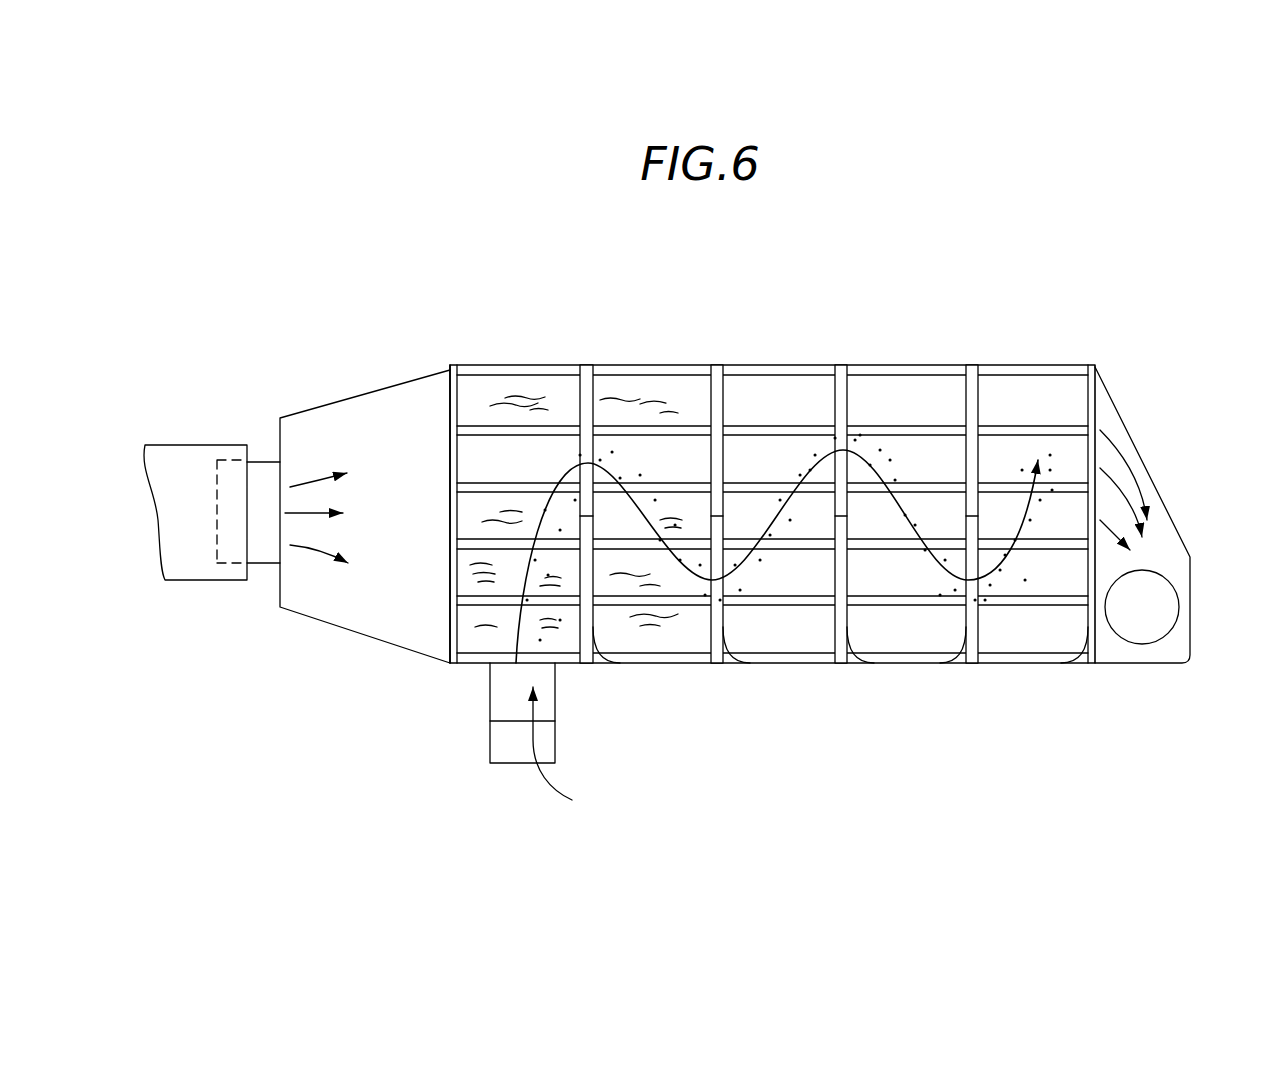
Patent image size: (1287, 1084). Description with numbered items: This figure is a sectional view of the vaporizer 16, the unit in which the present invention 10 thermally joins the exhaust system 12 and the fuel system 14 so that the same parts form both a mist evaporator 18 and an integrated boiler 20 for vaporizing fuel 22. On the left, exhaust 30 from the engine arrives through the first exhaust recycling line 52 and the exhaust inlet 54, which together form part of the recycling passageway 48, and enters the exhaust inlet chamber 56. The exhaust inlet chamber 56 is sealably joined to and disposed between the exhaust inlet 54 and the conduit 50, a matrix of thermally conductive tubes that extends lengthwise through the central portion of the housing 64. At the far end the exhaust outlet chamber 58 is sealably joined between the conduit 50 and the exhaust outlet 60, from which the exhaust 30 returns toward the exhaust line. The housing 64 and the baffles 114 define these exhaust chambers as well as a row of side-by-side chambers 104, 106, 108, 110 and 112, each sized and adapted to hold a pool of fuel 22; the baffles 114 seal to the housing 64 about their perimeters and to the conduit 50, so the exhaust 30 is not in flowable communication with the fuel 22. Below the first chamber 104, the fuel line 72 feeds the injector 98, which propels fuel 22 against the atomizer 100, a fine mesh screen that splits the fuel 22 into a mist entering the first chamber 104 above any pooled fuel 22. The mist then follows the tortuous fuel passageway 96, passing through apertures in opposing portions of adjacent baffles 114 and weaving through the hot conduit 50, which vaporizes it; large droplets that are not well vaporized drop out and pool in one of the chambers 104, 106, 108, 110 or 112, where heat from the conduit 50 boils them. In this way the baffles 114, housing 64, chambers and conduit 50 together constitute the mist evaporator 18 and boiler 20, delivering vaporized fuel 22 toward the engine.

The present invention 10 is at (937, 285).
The exhaust system 12 is at (290, 680).
The fuel system 14 is at (430, 828).
The vaporizer 16 is at (810, 268).
The mist evaporator 18 is at (483, 505).
The boiler 20 is at (642, 680).
The fuel 22 is at (493, 577).
The exhaust 30 is at (313, 552).
The recycling passageway 48 is at (180, 525).
The conduit 50 is at (490, 422).
The first exhaust recycling line 52 is at (186, 455).
The exhaust inlet 54 is at (217, 530).
The exhaust inlet chamber 56 is at (379, 607).
The exhaust outlet chamber 58 is at (1180, 652).
The exhaust outlet 60 is at (1147, 593).
The housing 64 is at (878, 365).
The fuel line 72 is at (530, 767).
The fuel passageway 96 is at (625, 477).
The injector 98 is at (515, 748).
The atomizer 100 is at (502, 688).
The first chamber 104 is at (485, 470).
The chamber 106 is at (649, 470).
The chamber 108 is at (741, 472).
The chamber 110 is at (907, 470).
The chamber 112 is at (1022, 590).
The baffles 114 is at (620, 663).